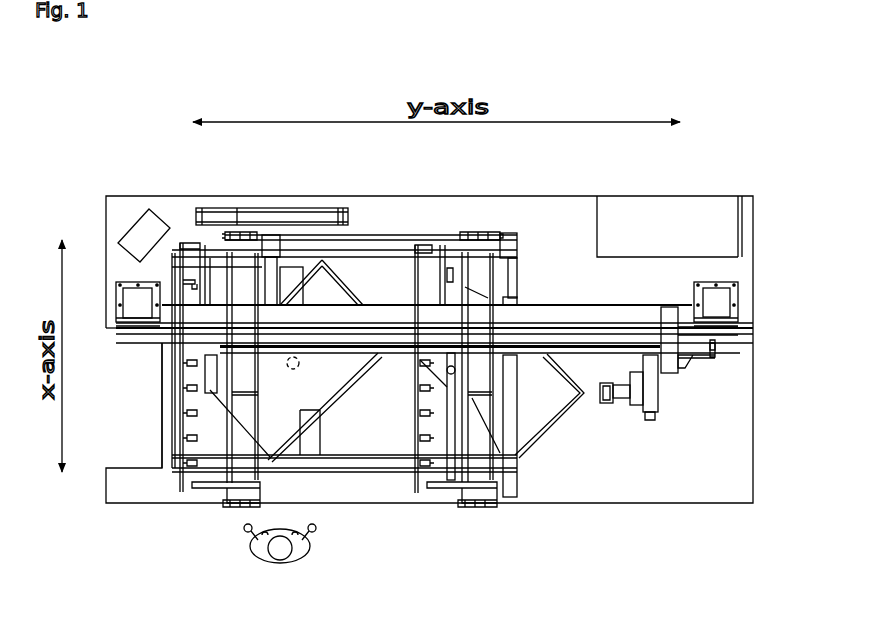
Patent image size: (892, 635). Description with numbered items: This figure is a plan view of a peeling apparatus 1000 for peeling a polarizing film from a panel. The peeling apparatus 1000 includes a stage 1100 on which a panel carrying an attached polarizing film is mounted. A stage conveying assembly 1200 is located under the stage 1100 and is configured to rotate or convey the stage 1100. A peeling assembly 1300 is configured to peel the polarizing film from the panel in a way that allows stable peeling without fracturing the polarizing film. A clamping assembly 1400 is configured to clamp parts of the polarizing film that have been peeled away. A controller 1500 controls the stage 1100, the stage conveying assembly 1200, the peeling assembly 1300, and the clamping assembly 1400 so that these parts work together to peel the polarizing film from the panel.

The peeling apparatus 1000 is at (204, 65).
The stage 1100 is at (347, 283).
The stage conveying assembly 1200 is at (296, 368).
The peeling assembly 1300 is at (402, 515).
The clamping assembly 1400 is at (695, 380).
The controller 1500 is at (668, 217).